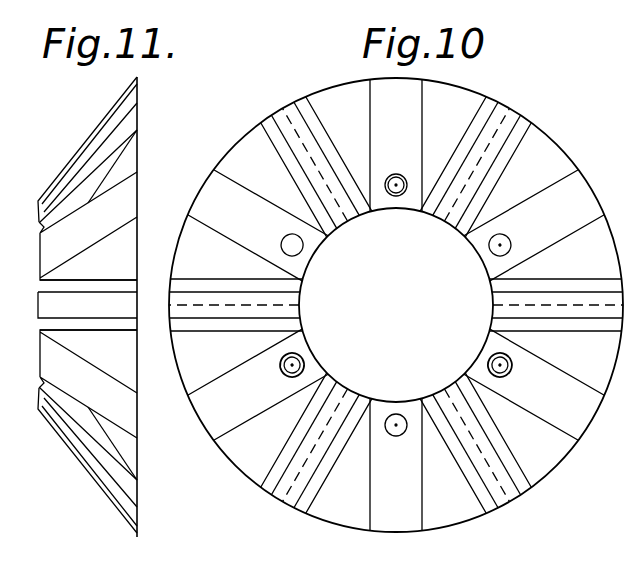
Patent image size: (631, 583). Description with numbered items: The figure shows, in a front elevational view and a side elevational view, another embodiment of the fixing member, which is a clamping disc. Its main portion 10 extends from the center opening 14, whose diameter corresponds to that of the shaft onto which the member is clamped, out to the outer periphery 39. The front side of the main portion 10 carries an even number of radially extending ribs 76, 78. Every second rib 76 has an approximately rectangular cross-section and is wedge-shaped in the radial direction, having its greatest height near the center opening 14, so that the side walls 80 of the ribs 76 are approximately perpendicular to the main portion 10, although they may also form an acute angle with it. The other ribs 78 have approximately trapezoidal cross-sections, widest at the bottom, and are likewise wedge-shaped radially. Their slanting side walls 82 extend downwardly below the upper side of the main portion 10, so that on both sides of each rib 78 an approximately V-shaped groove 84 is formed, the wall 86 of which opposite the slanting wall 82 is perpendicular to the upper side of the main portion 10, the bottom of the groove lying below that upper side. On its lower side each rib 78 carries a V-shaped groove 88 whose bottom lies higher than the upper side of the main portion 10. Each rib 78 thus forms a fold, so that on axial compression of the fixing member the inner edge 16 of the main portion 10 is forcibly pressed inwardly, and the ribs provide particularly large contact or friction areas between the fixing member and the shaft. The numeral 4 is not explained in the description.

In FIG. 10, the main portion 10 is at (256, 172).
In FIG. 11, the main portion 10 is at (120, 170).
In FIG. 10, the center opening 14 is at (410, 301).
In FIG. 10, the inner edge 16 is at (325, 352).
In FIG. 10, the outer periphery 39 is at (328, 82).
In FIG. 11, the outer periphery 39 is at (138, 78).
In FIG. 10, the rib 76 is at (403, 118).
In FIG. 11, the rib 76 is at (97, 220).
In FIG. 10, the rib 78 is at (514, 116).
In FIG. 11, the rib 78 is at (100, 309).
In FIG. 10, the side wall 80 is at (532, 427).
In FIG. 11, the side wall 80 is at (98, 252).
In FIG. 10, the slanting side wall 82 is at (517, 488).
In FIG. 11, the slanting side wall 82 is at (110, 288).
In FIG. 10, the V-shaped groove 84 is at (332, 460).
In FIG. 11, the V-shaped groove 84 is at (103, 330).
In FIG. 10, the wall 86 is at (515, 461).
In FIG. 10, the V-shaped groove 88 is at (310, 168).
In FIG. 10, the housing 4 is at (625, 409).